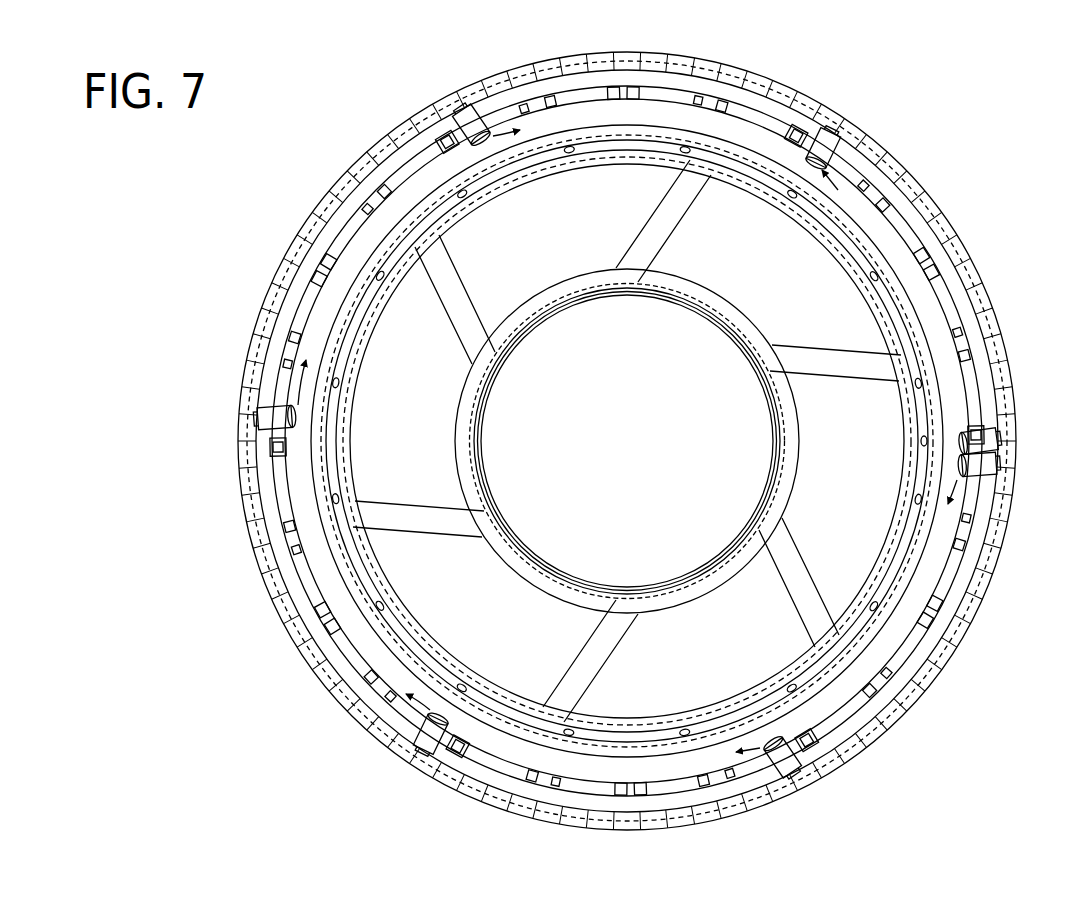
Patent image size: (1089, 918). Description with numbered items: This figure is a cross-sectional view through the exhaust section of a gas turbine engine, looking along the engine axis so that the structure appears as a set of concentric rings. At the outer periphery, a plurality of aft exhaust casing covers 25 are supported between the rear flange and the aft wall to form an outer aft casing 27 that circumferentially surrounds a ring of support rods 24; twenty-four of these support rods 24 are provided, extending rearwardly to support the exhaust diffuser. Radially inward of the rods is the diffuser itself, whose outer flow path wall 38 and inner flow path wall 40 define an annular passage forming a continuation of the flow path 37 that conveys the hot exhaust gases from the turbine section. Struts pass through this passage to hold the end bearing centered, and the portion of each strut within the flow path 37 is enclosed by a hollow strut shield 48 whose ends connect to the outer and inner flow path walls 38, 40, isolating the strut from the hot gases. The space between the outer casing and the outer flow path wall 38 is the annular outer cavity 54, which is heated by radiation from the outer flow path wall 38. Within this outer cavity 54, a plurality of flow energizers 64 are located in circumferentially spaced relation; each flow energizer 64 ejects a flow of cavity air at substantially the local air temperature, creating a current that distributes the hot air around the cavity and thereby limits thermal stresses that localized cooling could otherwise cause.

The support rod 24 is at (340, 237).
The aft exhaust casing cover 25 is at (347, 168).
The outer aft casing 27 is at (340, 197).
The flow path 37 is at (765, 240).
The outer flow path wall 38 is at (872, 290).
The inner flow path wall 40 is at (701, 288).
The strut shield 48 is at (463, 280).
The annular outer cavity 54 is at (300, 467).
The flow energizer 64 is at (483, 105).